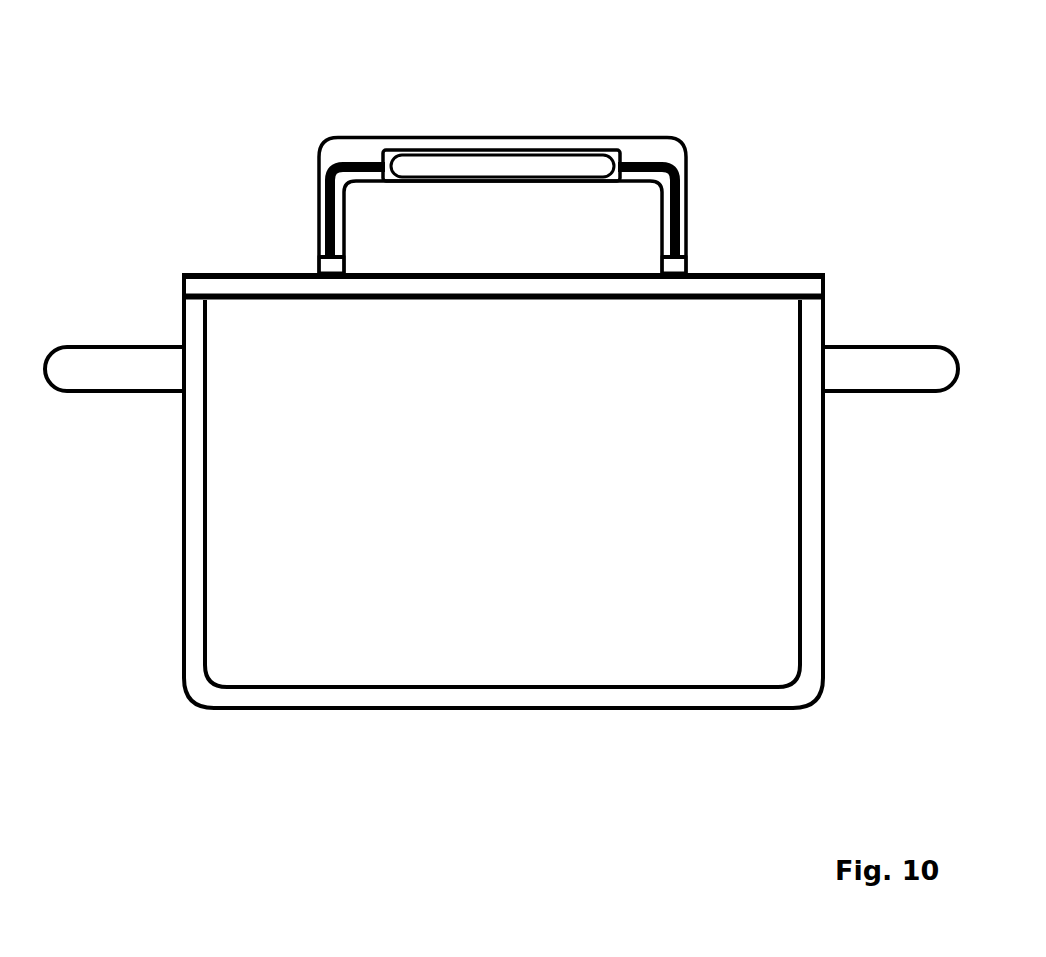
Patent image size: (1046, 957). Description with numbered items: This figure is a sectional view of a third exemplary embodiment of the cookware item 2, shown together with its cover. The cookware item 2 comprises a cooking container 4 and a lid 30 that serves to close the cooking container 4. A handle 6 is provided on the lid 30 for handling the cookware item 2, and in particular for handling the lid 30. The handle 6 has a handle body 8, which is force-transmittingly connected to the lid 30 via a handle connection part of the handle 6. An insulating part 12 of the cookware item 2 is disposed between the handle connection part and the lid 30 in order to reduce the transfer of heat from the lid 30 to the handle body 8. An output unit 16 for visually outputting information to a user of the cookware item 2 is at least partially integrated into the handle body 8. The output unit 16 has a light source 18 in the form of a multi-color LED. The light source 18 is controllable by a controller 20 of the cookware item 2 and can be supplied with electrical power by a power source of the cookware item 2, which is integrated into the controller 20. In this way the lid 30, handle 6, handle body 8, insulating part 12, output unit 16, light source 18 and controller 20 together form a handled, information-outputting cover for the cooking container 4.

The cookware item 2 is at (501, 464).
The cooking container 4 is at (813, 612).
The handle 6 is at (523, 162).
The handle body 8 is at (312, 197).
The insulating part 12 is at (697, 264).
The output unit 16 is at (524, 116).
The controller 20 is at (478, 168).
The light source 18 is at (687, 248).
The lid 30 is at (273, 278).